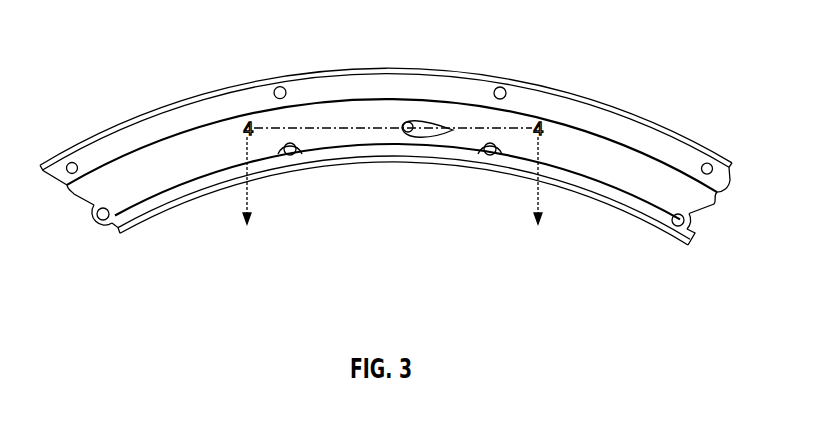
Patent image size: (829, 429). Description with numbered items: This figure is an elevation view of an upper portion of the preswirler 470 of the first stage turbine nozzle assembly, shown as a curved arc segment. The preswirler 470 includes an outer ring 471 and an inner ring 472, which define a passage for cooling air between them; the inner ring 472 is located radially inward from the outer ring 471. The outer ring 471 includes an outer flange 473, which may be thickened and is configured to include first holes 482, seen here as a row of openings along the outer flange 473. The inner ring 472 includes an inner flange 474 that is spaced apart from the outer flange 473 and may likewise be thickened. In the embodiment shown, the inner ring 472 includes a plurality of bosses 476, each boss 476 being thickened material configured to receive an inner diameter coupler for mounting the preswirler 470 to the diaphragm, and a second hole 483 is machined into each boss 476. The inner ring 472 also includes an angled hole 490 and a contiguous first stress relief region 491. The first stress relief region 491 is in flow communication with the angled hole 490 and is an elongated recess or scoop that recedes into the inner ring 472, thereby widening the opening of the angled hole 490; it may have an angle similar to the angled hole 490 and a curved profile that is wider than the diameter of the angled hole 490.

The preswirler 470 is at (398, 138).
The outer ring 471 is at (616, 107).
The inner ring 472 is at (641, 218).
The outer flange 473 is at (559, 105).
The inner flange 474 is at (597, 193).
The boss 476 is at (693, 221).
The first hole 482 is at (503, 87).
The second hole 483 is at (489, 158).
The angled hole 490 is at (405, 122).
The first stress relief region 491 is at (432, 138).